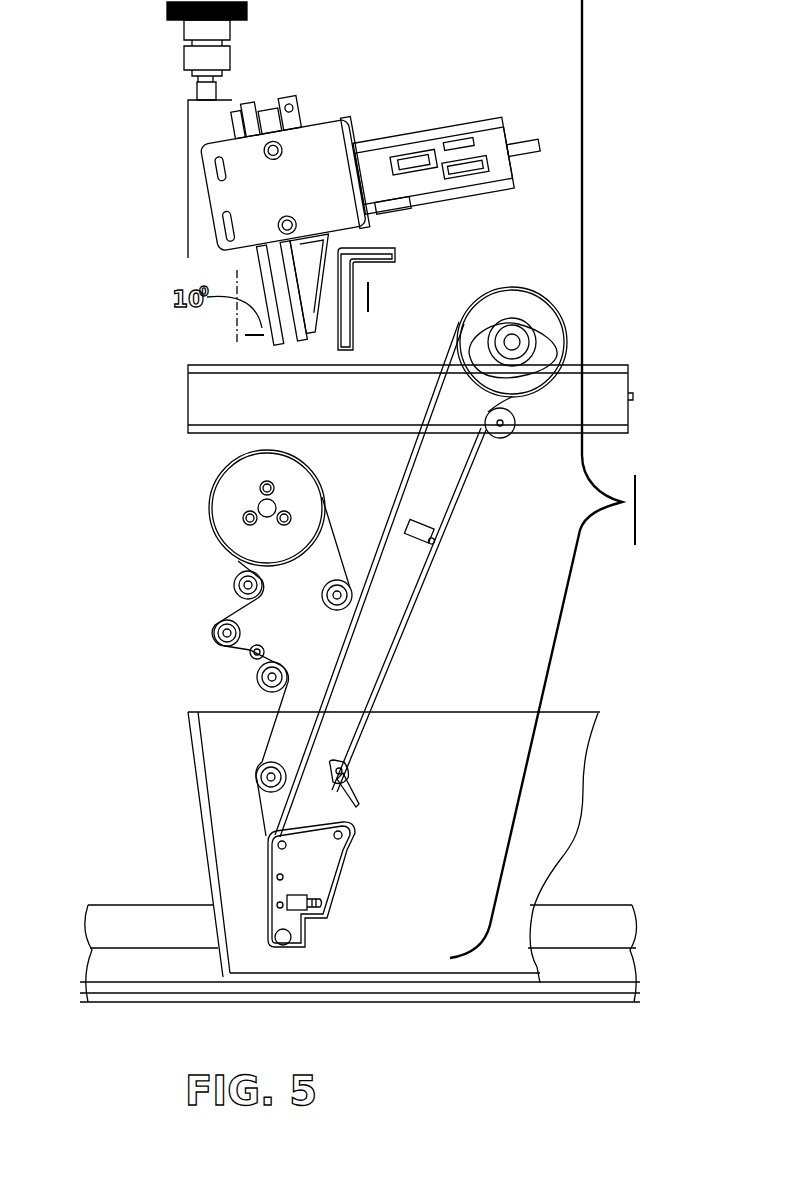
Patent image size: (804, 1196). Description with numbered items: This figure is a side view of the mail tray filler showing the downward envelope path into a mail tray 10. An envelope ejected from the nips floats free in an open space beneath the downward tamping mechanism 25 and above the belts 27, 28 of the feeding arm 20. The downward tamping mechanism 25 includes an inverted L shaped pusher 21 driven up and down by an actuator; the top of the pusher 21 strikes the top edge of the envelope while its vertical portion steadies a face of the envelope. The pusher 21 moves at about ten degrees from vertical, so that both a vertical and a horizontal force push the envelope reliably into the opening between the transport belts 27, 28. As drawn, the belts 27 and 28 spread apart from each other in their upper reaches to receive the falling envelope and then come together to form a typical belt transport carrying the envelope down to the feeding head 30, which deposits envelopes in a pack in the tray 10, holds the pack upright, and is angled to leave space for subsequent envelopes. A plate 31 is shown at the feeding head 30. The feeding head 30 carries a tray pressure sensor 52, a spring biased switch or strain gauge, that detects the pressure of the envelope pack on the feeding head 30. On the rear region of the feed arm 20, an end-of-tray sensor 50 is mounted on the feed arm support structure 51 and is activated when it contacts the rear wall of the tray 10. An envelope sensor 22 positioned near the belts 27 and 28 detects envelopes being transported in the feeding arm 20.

The mail tray 10 is at (565, 730).
The downward feeding arm 20 is at (175, 683).
The inverted L shaped pusher 21 is at (400, 250).
The envelope sensor 22 is at (410, 540).
The downward tamping mechanism 25 is at (304, 70).
The belt 27 is at (458, 487).
The belt 28 is at (232, 613).
The feeding head 30 is at (368, 819).
The cutter plate 31 is at (352, 822).
The end-of-tray sensor 50 is at (352, 787).
The feed arm support structure 51 is at (333, 760).
The tray pressure sensor 52 is at (297, 905).